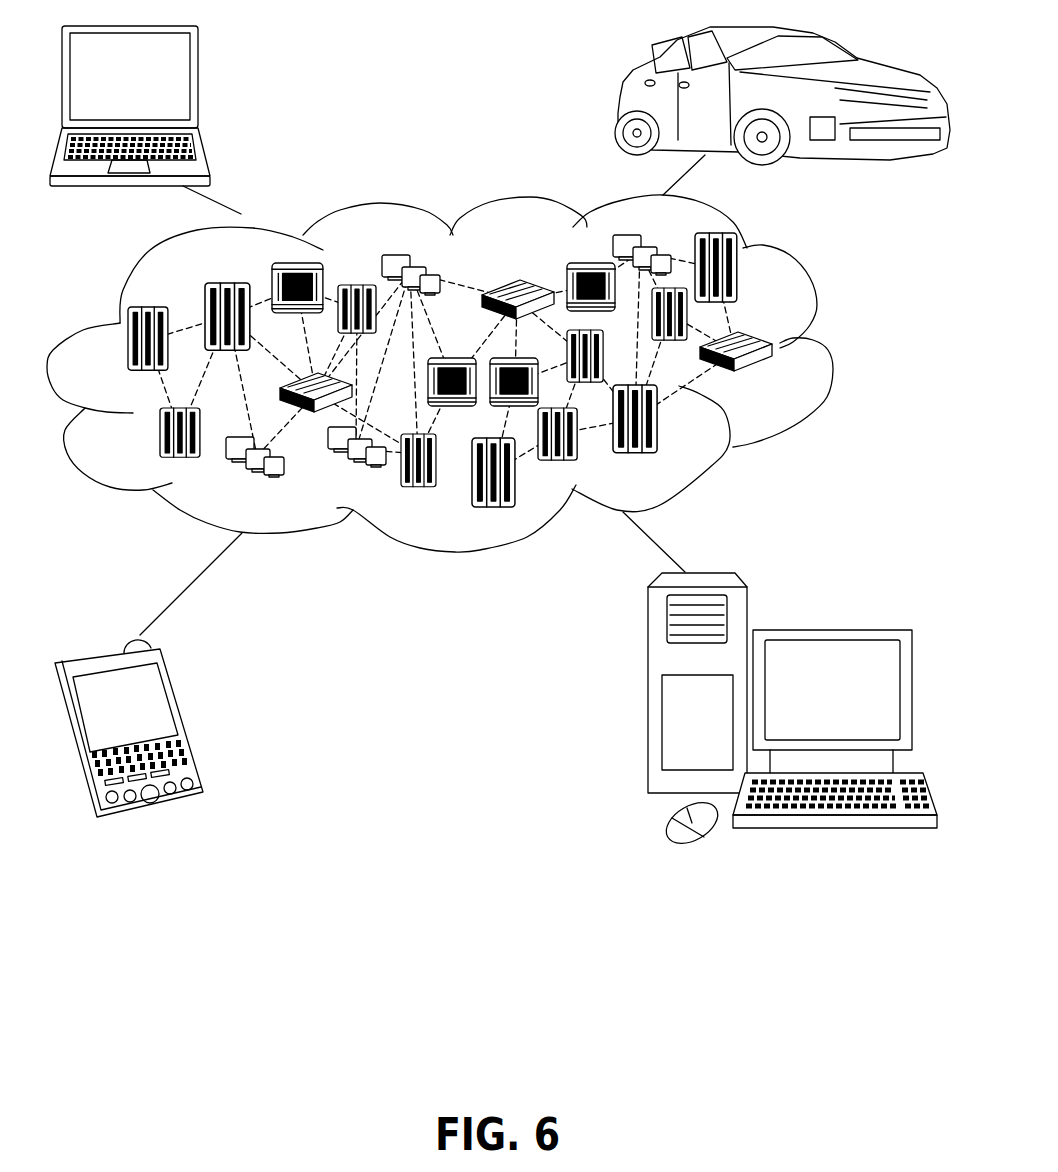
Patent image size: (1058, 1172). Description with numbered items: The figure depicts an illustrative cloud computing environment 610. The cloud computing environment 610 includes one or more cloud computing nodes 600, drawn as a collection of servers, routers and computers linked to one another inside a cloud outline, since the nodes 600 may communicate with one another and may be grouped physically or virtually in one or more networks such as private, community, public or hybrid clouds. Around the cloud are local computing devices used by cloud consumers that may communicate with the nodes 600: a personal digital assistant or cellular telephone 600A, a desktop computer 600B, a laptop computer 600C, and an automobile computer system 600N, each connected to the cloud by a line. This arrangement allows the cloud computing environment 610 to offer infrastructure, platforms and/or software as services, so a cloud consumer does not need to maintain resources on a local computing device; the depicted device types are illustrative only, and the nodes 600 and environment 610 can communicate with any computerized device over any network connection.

The cloud computing nodes 600 is at (776, 378).
The cloud computing environment 610 is at (837, 347).
The personal digital assistant (PDA) or cellular telephone 600A is at (187, 722).
The desktop computer 600B is at (830, 627).
The laptop computer 600C is at (198, 86).
The automobile computer system 600N is at (618, 99).